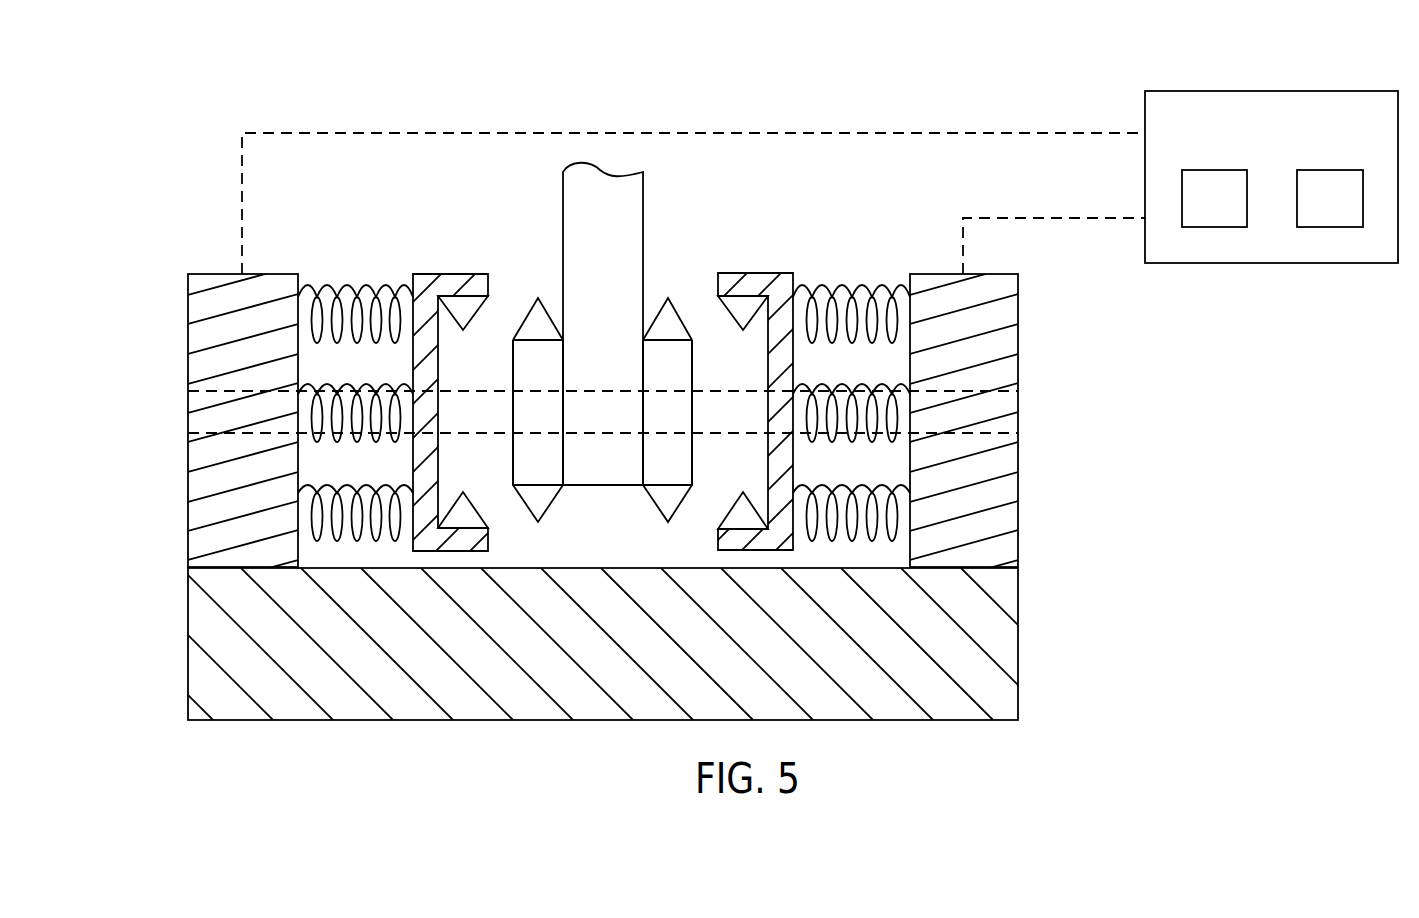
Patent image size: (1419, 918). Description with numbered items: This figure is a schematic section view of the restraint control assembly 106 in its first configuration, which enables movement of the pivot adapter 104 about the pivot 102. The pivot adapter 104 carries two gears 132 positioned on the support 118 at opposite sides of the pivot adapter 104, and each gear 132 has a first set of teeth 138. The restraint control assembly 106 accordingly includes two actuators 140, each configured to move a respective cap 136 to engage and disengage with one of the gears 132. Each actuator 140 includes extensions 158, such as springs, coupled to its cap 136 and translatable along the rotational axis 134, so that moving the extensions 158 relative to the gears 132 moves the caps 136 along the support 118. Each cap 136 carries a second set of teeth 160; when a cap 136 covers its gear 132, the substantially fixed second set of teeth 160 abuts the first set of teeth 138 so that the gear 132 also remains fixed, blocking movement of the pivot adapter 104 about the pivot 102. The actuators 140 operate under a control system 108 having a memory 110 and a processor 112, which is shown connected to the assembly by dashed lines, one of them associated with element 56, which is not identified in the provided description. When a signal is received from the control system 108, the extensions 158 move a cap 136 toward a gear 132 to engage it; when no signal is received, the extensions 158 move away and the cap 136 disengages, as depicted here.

The control line 56 is at (974, 204).
The pivot 102 is at (602, 378).
The pivot adapter 104 is at (620, 178).
The restraint control assembly 106 is at (168, 168).
The control system 108 is at (1269, 159).
The memory 110 is at (1222, 227).
The processor 112 is at (1337, 227).
The support 118 is at (1018, 672).
The gears 132 is at (513, 380).
The rotational axis 134 is at (188, 476).
The cap 136 is at (410, 276).
The first set of teeth 138 is at (538, 300).
The actuators 140 is at (188, 373).
The extensions 158 is at (345, 282).
The second set of teeth 160 is at (465, 305).